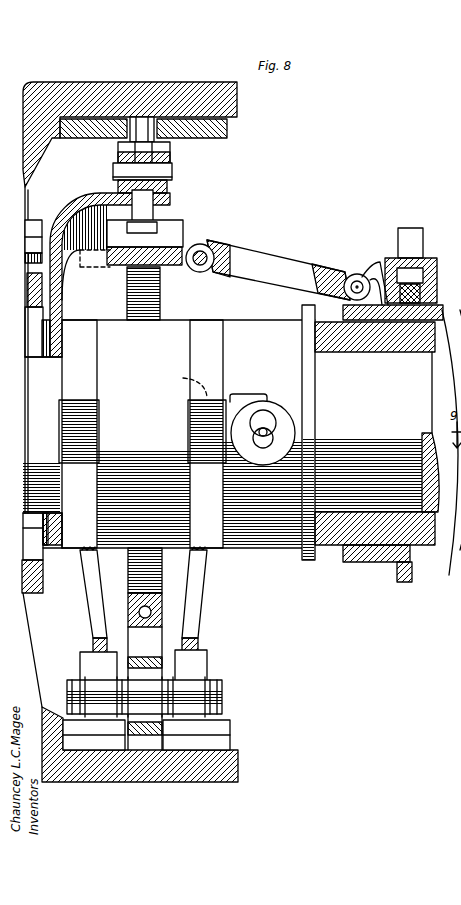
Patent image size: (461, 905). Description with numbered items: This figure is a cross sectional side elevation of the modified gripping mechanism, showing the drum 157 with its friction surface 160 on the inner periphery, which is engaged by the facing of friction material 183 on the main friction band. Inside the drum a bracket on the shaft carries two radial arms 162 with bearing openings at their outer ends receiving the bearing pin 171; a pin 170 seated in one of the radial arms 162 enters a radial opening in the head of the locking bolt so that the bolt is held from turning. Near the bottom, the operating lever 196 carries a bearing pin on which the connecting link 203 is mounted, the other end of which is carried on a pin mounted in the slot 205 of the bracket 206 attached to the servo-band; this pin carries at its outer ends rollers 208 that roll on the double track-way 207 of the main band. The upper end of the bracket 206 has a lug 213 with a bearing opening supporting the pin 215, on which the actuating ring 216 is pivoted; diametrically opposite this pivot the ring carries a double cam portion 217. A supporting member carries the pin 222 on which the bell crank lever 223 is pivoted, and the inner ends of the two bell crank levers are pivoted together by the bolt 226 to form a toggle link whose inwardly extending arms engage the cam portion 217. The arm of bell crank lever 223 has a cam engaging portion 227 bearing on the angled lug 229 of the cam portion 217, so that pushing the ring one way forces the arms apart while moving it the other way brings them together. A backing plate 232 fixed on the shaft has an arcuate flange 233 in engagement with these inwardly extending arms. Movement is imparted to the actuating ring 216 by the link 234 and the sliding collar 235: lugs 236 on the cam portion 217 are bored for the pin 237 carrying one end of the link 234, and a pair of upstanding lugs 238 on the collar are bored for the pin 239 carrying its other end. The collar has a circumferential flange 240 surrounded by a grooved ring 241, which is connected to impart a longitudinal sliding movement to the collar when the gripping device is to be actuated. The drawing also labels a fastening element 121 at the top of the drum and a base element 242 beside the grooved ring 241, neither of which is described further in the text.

The drum 157 is at (183, 92).
The friction surface 160 is at (238, 117).
The bolt 121 is at (144, 141).
The bolt 226 is at (172, 160).
The pin 222 is at (175, 173).
The arcuate flange 233 is at (97, 192).
The backing plate 232 is at (52, 222).
The lug 229 is at (33, 237).
The bell crank lever 223 is at (157, 204).
The cam engaging portion 227 is at (160, 223).
The double cam portion 217 is at (115, 266).
The actuating ring 216 is at (160, 301).
The link 234 is at (270, 262).
The lugs 236 is at (210, 247).
The pin 237 is at (222, 251).
The pin 239 is at (343, 297).
The upstanding lugs 238 is at (352, 274).
The sliding collar 235 is at (378, 262).
The circumferential flange 240 is at (415, 265).
The grooved ring 241 is at (423, 275).
The base 242 is at (437, 303).
The radial arms 162 is at (198, 349).
The bearing pin 171 is at (180, 386).
The pin 170 is at (246, 394).
The operating lever 196 is at (82, 567).
The bracket 206 is at (185, 621).
The lug 213 is at (137, 630).
The pin 215 is at (163, 604).
The slot 205 is at (198, 647).
The connecting link 203 is at (90, 658).
The rollers 208 is at (213, 676).
The double track-way 207 is at (233, 725).
The facing of friction material 183 is at (220, 745).